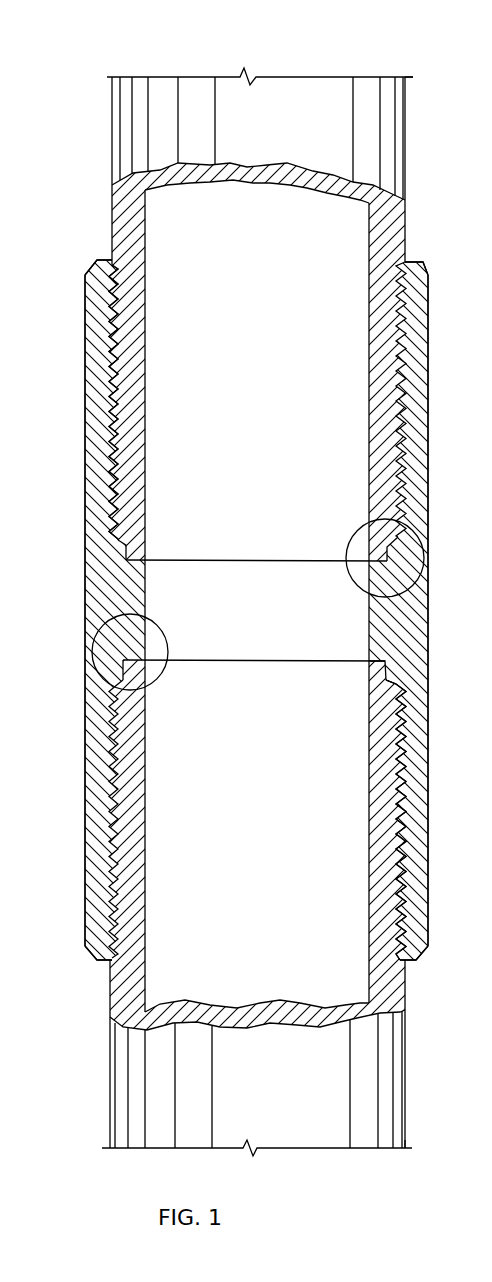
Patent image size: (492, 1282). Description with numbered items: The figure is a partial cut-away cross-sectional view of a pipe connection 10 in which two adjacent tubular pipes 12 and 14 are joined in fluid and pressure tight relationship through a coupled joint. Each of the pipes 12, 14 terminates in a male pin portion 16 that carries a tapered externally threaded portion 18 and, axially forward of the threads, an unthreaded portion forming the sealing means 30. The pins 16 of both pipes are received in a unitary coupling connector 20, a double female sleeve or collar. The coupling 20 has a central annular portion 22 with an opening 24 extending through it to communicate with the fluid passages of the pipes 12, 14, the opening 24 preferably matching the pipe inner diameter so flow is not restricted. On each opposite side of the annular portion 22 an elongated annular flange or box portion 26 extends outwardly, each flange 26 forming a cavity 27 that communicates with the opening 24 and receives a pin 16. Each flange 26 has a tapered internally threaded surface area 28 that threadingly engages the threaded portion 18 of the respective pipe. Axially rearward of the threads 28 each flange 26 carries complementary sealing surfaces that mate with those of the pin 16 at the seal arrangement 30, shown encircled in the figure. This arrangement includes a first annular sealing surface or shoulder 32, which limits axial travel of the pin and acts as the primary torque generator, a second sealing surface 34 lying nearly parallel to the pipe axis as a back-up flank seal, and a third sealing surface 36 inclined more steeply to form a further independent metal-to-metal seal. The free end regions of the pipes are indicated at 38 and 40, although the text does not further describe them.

The portion of two adjacent tubular pipes 10 is at (153, 68).
The tubular pipe 12 is at (270, 118).
The tubular pipe 14 is at (325, 1103).
The pin portion 16 is at (390, 328).
The threaded portion 18 is at (118, 328).
The coupling connector 20 is at (84, 405).
The annular portion 22 is at (145, 588).
The opening 24 is at (271, 597).
The annular flange or box portion 26 is at (100, 305).
The cavity 27 is at (302, 420).
The internally threaded surface area 28 is at (405, 348).
The sealing means 30 is at (122, 543).
The first annular sealing surface 32 is at (383, 657).
The second annular sealing surface 34 is at (391, 669).
The third annular sealing surface 36 is at (394, 681).
The upper pipe free end 38 is at (448, 63).
The lower pipe free end 40 is at (491, 1001).